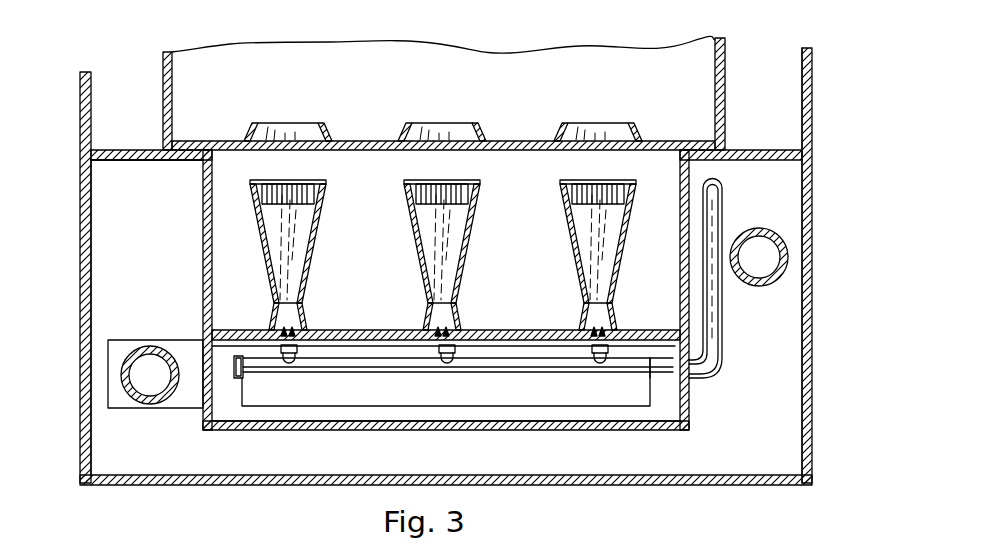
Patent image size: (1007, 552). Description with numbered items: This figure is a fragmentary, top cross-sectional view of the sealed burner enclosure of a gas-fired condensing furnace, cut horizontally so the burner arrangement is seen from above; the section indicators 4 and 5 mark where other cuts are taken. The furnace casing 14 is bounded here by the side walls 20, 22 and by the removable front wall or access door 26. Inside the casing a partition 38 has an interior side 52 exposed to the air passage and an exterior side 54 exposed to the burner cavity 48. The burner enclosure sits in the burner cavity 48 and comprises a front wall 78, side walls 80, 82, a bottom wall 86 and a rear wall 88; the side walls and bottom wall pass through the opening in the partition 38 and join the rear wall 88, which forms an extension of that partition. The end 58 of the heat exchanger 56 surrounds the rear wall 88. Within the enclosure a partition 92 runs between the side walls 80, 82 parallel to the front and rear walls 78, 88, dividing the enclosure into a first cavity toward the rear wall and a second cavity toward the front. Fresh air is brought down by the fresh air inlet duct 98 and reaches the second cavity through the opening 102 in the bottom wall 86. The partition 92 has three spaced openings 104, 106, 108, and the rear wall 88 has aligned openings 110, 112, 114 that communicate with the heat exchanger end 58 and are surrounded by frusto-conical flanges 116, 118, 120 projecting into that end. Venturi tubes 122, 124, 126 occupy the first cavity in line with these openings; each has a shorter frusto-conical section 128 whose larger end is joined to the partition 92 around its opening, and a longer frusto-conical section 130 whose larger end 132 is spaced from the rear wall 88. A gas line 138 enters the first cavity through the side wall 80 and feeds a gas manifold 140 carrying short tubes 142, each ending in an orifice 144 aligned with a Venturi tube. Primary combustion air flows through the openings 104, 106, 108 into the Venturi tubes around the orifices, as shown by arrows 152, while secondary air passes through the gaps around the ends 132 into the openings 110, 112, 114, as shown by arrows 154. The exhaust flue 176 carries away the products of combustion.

The section line 4- 4 is at (68, 380).
The section line 5- 5 is at (151, 99).
The enclosure or casing 14 is at (815, 115).
The side wall 20 is at (812, 222).
The side wall 22 is at (80, 107).
The removable front wall or access door 26 is at (700, 487).
The partition 38 is at (161, 160).
The burner cavity 48 is at (103, 301).
The interior side 52 is at (130, 150).
The exterior side 54 is at (105, 160).
The heat exchanger 56 is at (458, 40).
The end of heat exchanger 58 is at (727, 68).
The front wall 78 is at (640, 431).
The side wall 80 is at (690, 415).
The side wall 82 is at (200, 415).
The bottom wall 86 is at (415, 431).
The rear wall 88 is at (360, 141).
The partition 92 is at (340, 372).
The fresh air inlet duct 98 is at (137, 348).
The opening 102 is at (280, 400).
The opening 104 is at (305, 318).
The opening 106 is at (460, 318).
The opening 108 is at (582, 318).
The opening 110 is at (262, 141).
The opening 112 is at (420, 141).
The opening 114 is at (575, 141).
The frusto-conical flange 116 is at (248, 135).
The frusto-conical flange 118 is at (403, 140).
The frusto-conical flange 120 is at (557, 141).
The Venturi tube 122 is at (255, 258).
The Venturi tube 124 is at (410, 262).
The Venturi tube 126 is at (572, 262).
The shorter frusto-conical section 128 is at (270, 318).
The longer frusto-conical section 130 is at (267, 272).
The larger end 132 is at (258, 195).
The gas line 138 is at (720, 296).
The gas manifold 140 is at (550, 370).
The short tube 142 is at (296, 362).
The orifice 144 is at (240, 368).
The arrows 152 is at (235, 347).
The arrows 154 is at (262, 158).
The exhaust flue 176 is at (775, 232).